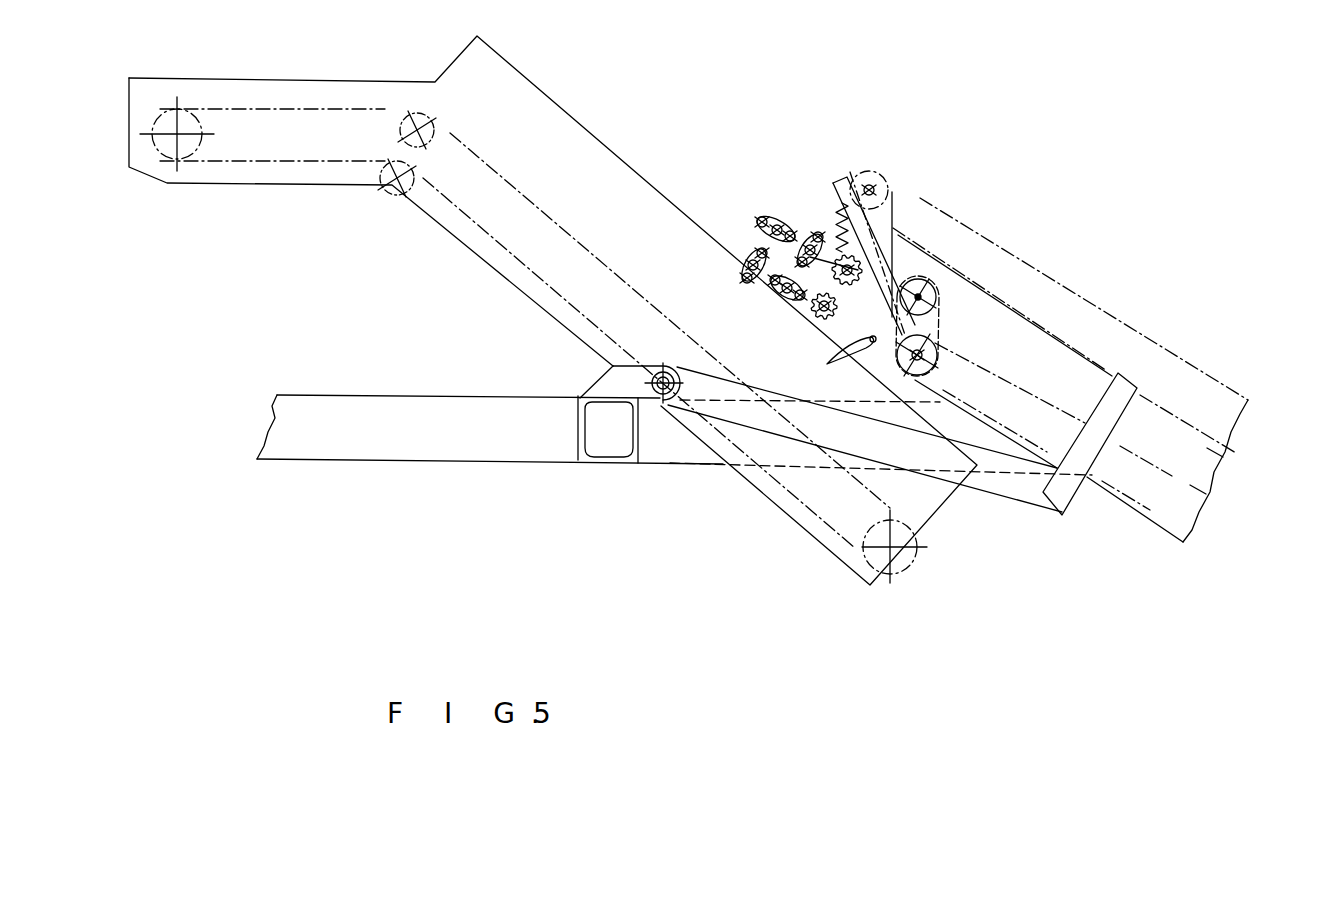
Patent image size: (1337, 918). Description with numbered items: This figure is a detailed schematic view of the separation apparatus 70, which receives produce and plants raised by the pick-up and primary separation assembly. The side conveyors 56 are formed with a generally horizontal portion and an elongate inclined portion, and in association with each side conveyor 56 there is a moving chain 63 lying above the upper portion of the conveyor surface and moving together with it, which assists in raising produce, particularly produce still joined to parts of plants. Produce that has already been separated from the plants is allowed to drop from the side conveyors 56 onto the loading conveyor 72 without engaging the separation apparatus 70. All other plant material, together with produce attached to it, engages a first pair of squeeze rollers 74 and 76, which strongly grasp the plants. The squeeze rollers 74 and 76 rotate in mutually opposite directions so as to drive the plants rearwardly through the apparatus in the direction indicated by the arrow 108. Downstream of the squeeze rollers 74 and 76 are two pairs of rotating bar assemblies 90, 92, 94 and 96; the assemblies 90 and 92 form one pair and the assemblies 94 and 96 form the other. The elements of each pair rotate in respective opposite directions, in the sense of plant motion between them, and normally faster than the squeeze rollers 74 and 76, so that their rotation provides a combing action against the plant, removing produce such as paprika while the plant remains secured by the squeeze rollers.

The side conveyor 56 is at (1153, 523).
The moving chain 63 is at (1005, 265).
The separation apparatus 70 is at (796, 244).
The loading conveyor 72 is at (648, 300).
The squeeze roller 74 is at (915, 214).
The squeeze roller 76 is at (836, 310).
The rotating bar assembly 90 is at (812, 238).
The rotating bar assembly 92 is at (777, 287).
The rotating bar assembly 94 is at (780, 222).
The rotating bar assembly 96 is at (753, 262).
The arrow 108 is at (740, 213).